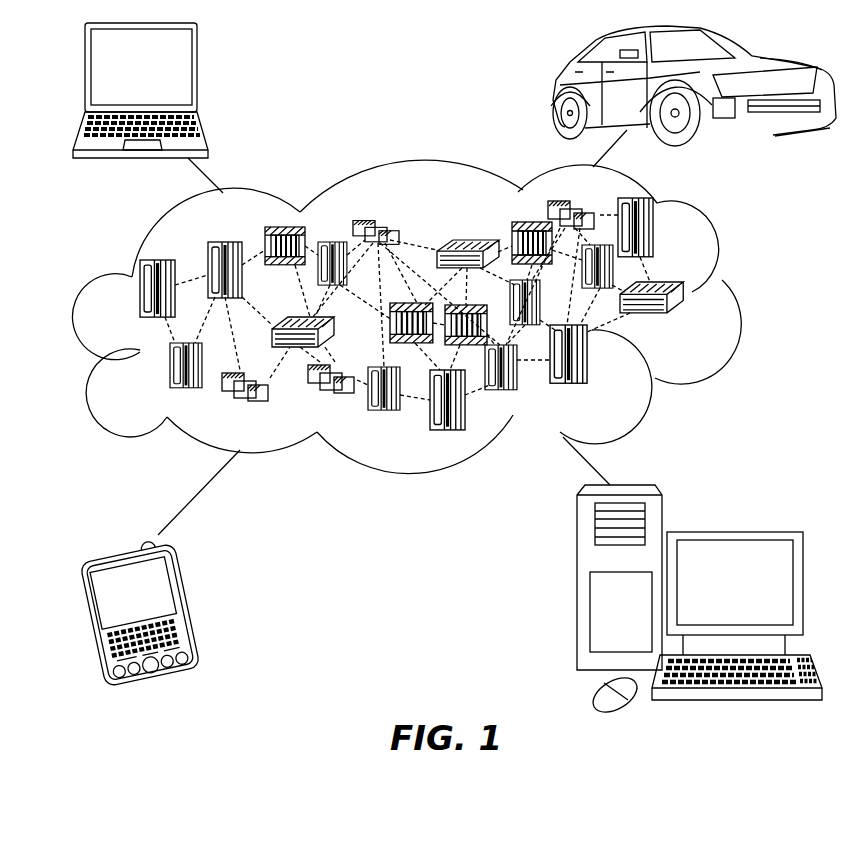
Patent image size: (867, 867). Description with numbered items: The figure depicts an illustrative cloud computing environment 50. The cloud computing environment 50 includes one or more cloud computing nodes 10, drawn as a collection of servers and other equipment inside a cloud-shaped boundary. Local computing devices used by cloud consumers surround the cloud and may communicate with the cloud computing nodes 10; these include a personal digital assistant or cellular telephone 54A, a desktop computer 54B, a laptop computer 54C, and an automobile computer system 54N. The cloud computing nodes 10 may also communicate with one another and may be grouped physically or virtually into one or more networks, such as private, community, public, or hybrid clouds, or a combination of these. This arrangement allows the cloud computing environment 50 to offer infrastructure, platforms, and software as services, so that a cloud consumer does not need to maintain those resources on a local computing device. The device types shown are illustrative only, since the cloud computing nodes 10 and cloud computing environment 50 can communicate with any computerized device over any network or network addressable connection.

The cloud computing nodes 10 is at (684, 319).
The cloud computing environment 50 is at (732, 292).
The personal digital assistant (PDA) or cellular telephone 54A is at (187, 605).
The desktop computer 54B is at (740, 531).
The laptop computer 54C is at (198, 72).
The automobile computer system 54N is at (553, 90).